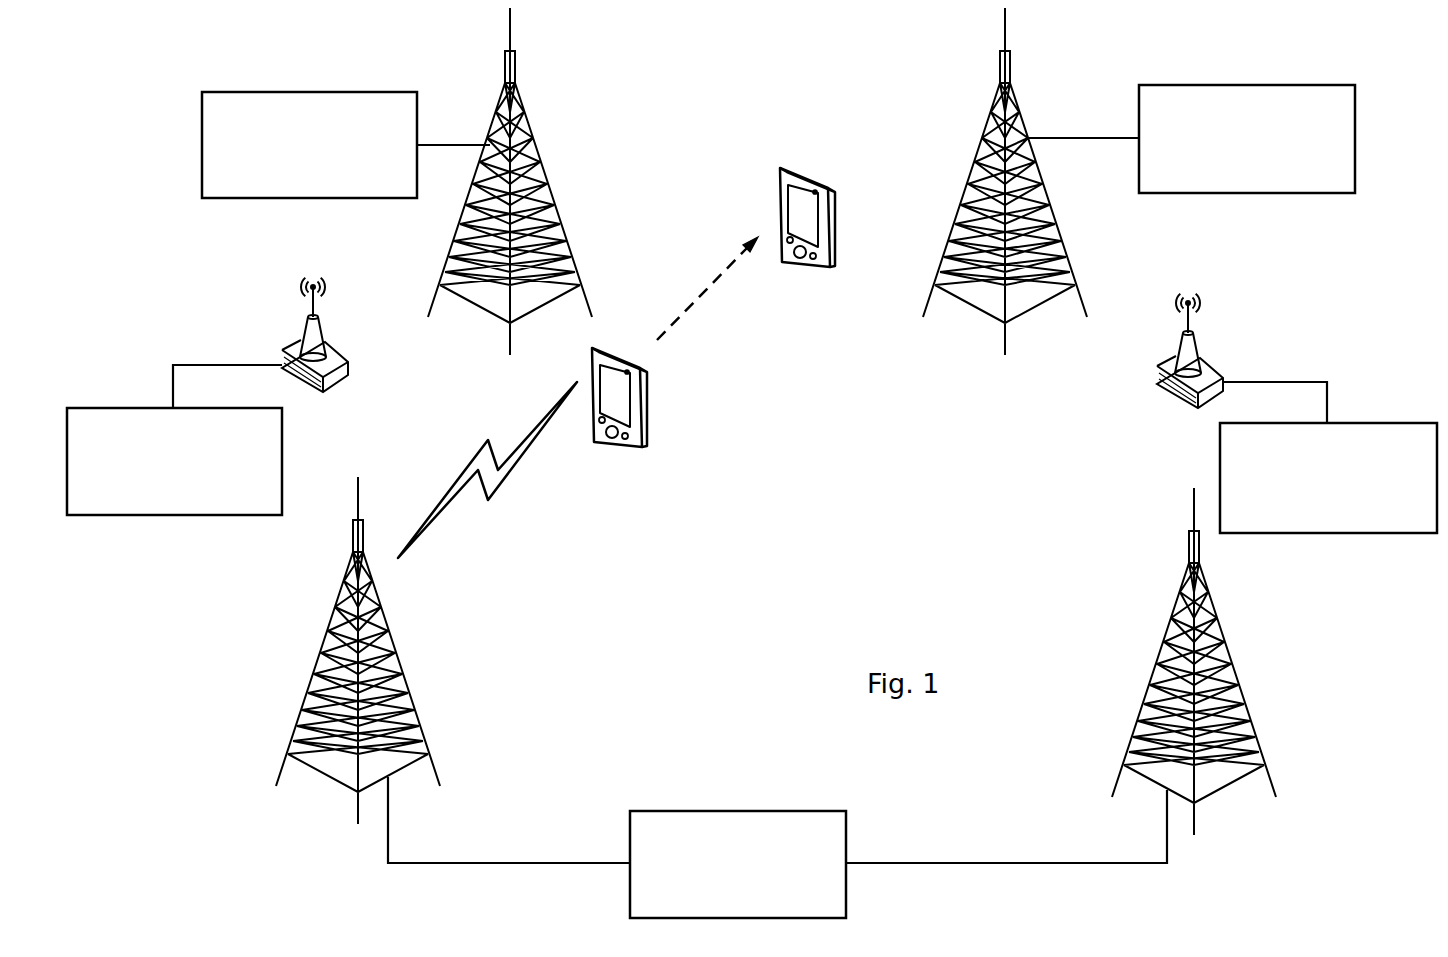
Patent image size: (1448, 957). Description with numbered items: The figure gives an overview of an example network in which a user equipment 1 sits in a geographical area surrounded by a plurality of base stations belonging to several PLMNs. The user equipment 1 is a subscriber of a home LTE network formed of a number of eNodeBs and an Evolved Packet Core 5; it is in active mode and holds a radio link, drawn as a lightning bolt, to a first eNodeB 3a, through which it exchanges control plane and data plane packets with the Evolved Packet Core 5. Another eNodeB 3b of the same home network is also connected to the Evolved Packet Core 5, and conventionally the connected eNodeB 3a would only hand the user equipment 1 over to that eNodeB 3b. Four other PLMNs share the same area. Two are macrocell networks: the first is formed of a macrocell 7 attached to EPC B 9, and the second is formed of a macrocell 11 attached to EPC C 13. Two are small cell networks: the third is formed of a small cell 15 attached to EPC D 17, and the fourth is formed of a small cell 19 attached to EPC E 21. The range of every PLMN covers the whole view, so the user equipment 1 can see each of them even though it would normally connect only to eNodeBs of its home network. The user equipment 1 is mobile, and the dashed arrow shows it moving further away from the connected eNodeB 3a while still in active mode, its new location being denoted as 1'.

The user equipment 1 is at (635, 397).
The new location of the user equipment 1' is at (811, 202).
The first eNodeB 3a is at (385, 622).
The another eNodeB 3b is at (1217, 613).
The Evolved Packet Core 5 is at (667, 811).
The macrocell 7 is at (998, 83).
The EPC B 9 is at (1220, 85).
The macrocell 11 is at (517, 70).
The EPC C 13 is at (328, 91).
The small cell 15 is at (1198, 338).
The EPC D 17 is at (1392, 423).
The small cell 19 is at (325, 323).
The EPC E 21 is at (83, 407).